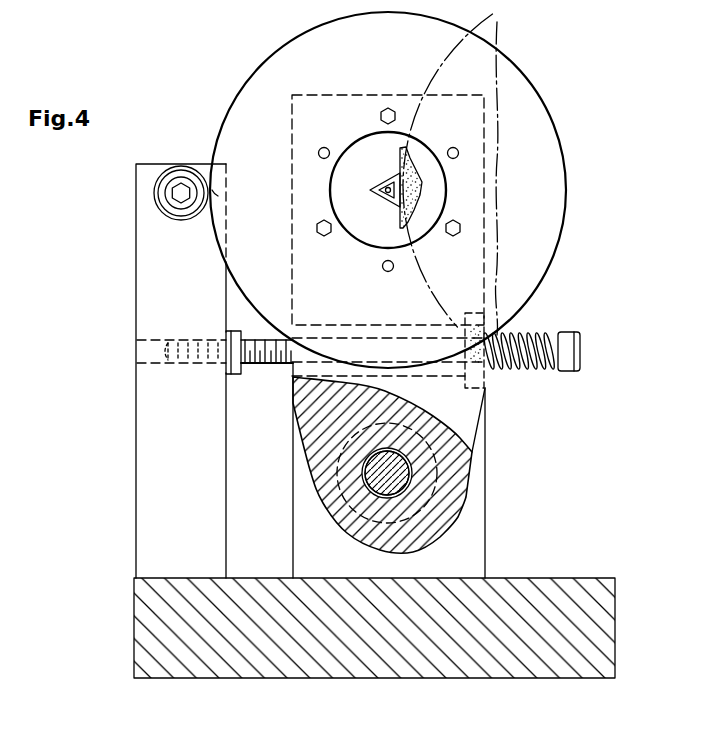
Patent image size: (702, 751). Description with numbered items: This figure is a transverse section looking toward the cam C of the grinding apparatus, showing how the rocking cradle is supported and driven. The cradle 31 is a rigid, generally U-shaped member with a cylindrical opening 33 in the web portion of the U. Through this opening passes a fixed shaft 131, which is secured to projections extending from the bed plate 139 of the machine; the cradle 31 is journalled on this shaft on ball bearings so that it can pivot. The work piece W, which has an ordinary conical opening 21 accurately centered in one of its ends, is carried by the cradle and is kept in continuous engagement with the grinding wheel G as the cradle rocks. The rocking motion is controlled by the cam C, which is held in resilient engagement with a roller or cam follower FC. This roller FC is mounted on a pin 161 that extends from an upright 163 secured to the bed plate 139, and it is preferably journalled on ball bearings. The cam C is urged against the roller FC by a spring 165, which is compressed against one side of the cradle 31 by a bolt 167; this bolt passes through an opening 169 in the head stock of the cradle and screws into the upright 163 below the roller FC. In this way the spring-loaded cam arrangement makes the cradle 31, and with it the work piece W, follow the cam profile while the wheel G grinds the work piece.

The cam C is at (307, 44).
The wheel G is at (496, 28).
The work piece W is at (383, 184).
The conical opening 21 is at (392, 199).
The cradle 31 is at (472, 448).
The cylindrical opening 33 is at (404, 488).
The fixed shaft 131 is at (380, 478).
The bed plate 139 is at (204, 582).
The pin 161 is at (180, 203).
The upright 163 is at (145, 265).
The spring 165 is at (545, 368).
The bolt 167 is at (572, 334).
The opening 169 is at (486, 376).
The roller or cam follower FC is at (173, 169).